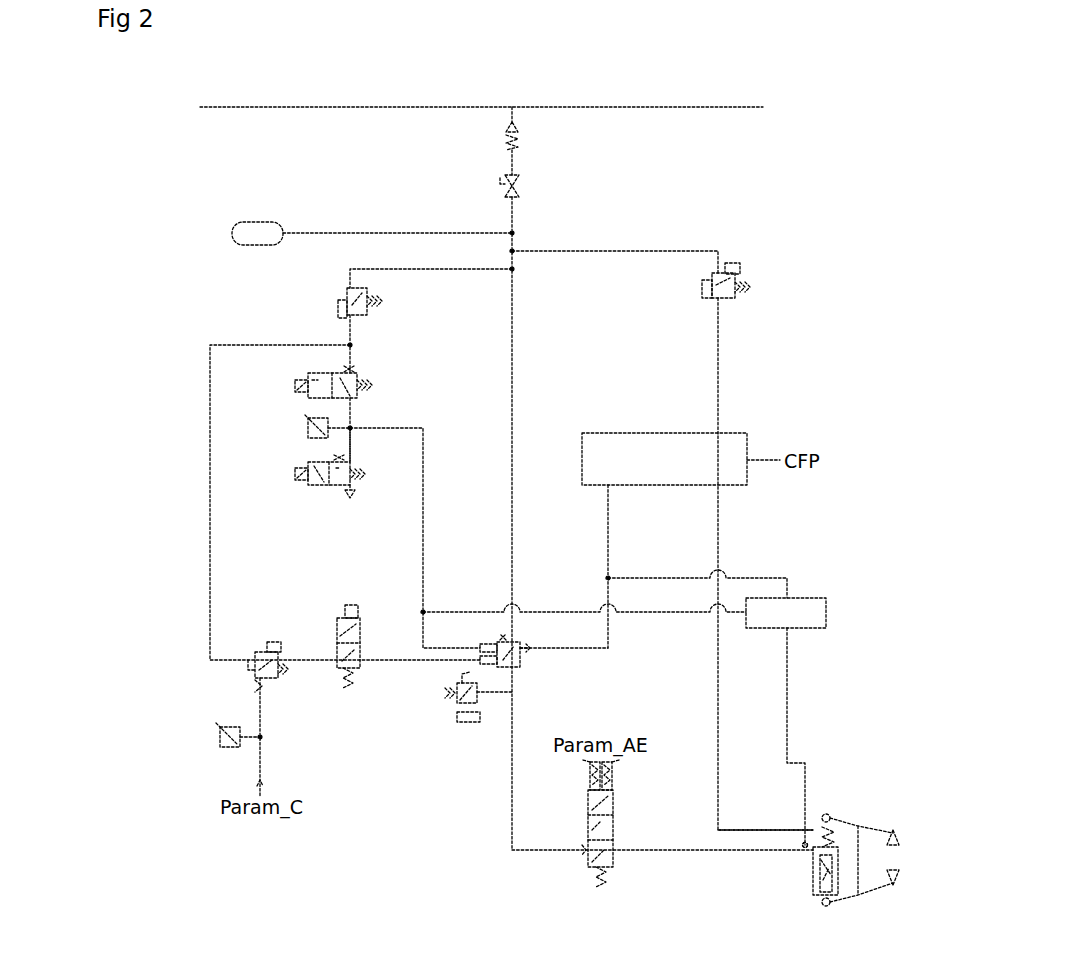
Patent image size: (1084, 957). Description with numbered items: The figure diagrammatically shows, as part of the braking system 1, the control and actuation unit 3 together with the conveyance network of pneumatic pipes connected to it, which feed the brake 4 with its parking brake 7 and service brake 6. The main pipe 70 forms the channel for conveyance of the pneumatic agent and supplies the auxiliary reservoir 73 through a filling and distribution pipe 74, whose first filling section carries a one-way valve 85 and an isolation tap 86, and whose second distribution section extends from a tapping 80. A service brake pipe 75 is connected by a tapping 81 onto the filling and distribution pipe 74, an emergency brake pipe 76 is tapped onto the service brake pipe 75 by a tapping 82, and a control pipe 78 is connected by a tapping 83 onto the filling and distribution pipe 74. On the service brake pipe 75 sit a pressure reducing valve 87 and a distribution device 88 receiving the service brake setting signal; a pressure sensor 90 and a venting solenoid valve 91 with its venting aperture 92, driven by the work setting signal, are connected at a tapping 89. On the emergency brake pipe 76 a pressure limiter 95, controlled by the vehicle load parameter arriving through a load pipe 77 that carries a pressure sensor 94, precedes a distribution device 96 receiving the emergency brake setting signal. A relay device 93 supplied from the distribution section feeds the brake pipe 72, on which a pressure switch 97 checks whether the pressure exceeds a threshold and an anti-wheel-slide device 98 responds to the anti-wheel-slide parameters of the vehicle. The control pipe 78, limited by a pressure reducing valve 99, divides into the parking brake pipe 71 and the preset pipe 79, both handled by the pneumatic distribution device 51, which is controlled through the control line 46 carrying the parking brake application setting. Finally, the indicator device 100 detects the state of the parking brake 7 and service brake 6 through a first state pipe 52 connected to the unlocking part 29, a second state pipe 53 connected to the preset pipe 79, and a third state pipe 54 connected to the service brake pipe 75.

The braking system 1 is at (797, 135).
The control and actuation unit 3 is at (193, 230).
The brake 4 is at (870, 830).
The service brake 6 is at (815, 895).
The parking brake 7 is at (830, 818).
The unlocking part 29 is at (804, 848).
The control line 46 is at (758, 460).
The pneumatic distribution device 51 is at (681, 540).
The first state pipe 52 is at (787, 678).
The second state pipe 53 is at (776, 578).
The third state pipe 54 is at (662, 612).
The main pipe 70 is at (614, 107).
The parking brake pipe 71 is at (746, 830).
The brake pipe 72 is at (512, 790).
The auxiliary reservoir 73 is at (258, 226).
The filling and distribution pipe 74 is at (512, 166).
The service brake pipe 75 is at (392, 269).
The emergency brake pipe 76 is at (250, 345).
The load pipe 77 is at (350, 450).
The control pipe 78 is at (612, 251).
The preset pipe 79 is at (608, 554).
The tapping 80 is at (513, 233).
The tapping 81 is at (513, 269).
The tapping 82 is at (350, 345).
The tapping 83 is at (512, 251).
The one-way valve 85 is at (513, 134).
The isolation tap 86 is at (514, 180).
The pressure reducing valve 87 is at (366, 292).
The distribution device 88 is at (352, 376).
The tapping 89 is at (350, 428).
The pressure sensor 90 is at (308, 428).
The venting solenoid valve 91 is at (308, 480).
The venting aperture 92 is at (350, 498).
The relay device 93 is at (520, 666).
The pressure sensor 94 is at (222, 748).
The pressure limiter 95 is at (258, 652).
The distribution device 96 is at (340, 605).
The pressure switch 97 is at (457, 690).
The anti-wheel-slide device 98 is at (588, 866).
The pressure reducing valve 99 is at (728, 268).
The indicator device 100 is at (786, 613).